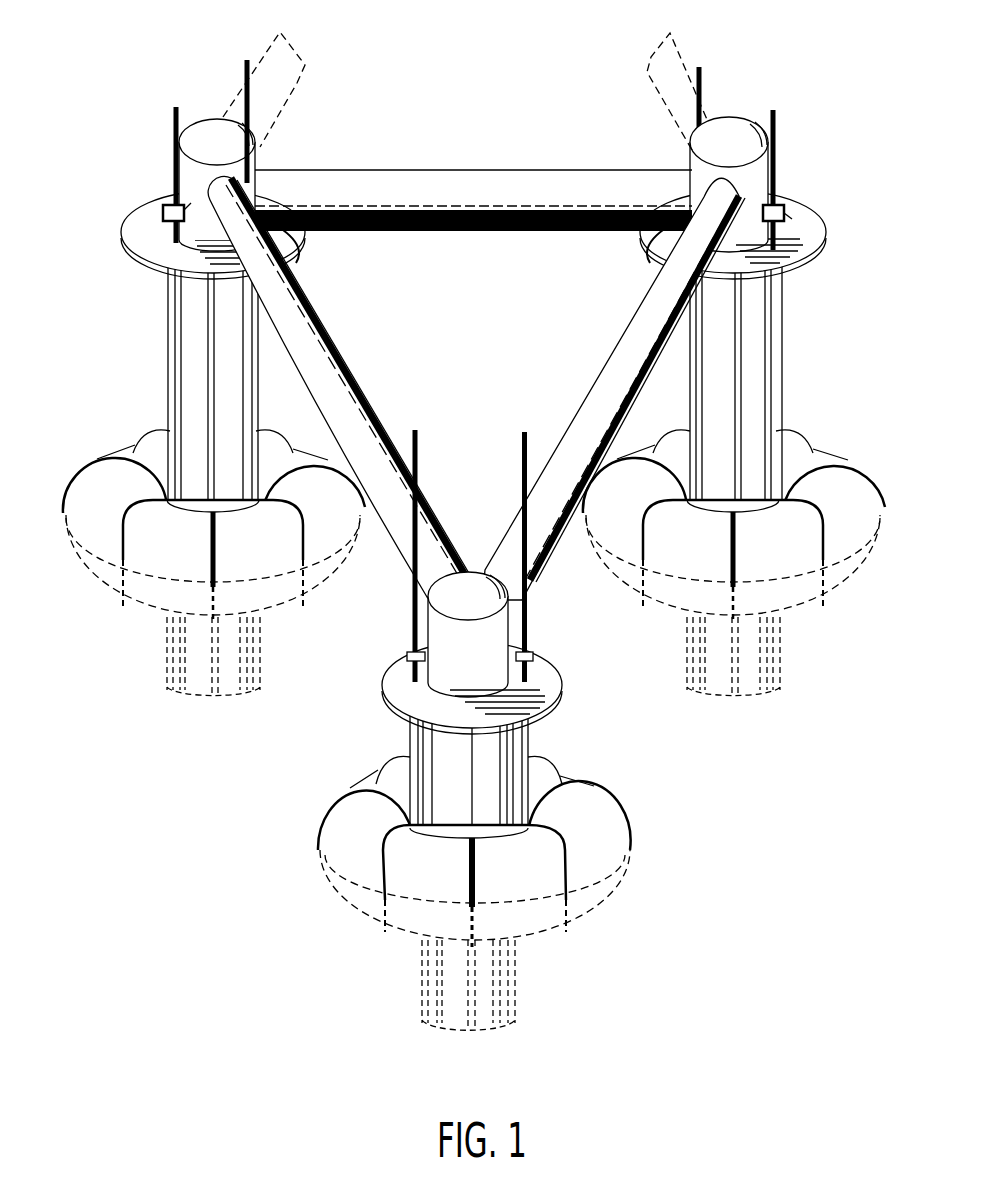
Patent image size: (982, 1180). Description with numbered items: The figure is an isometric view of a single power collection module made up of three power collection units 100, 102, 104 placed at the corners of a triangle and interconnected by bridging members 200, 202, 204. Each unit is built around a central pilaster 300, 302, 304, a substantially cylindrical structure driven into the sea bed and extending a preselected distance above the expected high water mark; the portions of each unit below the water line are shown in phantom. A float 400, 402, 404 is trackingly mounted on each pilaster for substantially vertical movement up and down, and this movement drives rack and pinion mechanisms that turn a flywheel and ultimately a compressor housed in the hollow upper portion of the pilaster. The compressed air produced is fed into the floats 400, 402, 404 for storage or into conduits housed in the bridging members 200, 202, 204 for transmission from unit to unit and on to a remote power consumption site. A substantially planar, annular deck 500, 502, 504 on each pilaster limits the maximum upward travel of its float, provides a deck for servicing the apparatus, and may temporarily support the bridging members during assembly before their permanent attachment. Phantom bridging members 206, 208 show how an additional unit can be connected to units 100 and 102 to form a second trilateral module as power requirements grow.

The power collection unit 100 is at (475, 531).
The power collection unit 102 is at (140, 294).
The power collection unit 104 is at (803, 291).
The bridging member 200 is at (318, 360).
The bridging member 202 is at (530, 180).
The bridging member 204 is at (620, 365).
The phantom bridging member 206 is at (282, 82).
The phantom bridging member 208 is at (667, 85).
The pilaster 300 is at (453, 758).
The pilaster 302 is at (190, 350).
The pilaster 304 is at (752, 355).
The float 400 is at (340, 850).
The float 402 is at (140, 452).
The float 404 is at (800, 455).
The deck 500 is at (545, 672).
The deck 502 is at (292, 240).
The deck 504 is at (653, 245).